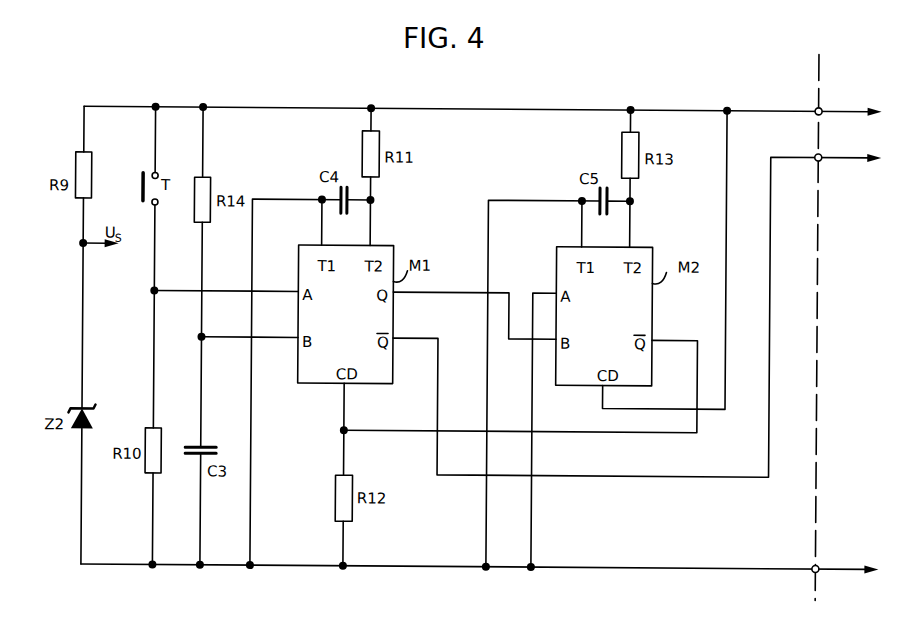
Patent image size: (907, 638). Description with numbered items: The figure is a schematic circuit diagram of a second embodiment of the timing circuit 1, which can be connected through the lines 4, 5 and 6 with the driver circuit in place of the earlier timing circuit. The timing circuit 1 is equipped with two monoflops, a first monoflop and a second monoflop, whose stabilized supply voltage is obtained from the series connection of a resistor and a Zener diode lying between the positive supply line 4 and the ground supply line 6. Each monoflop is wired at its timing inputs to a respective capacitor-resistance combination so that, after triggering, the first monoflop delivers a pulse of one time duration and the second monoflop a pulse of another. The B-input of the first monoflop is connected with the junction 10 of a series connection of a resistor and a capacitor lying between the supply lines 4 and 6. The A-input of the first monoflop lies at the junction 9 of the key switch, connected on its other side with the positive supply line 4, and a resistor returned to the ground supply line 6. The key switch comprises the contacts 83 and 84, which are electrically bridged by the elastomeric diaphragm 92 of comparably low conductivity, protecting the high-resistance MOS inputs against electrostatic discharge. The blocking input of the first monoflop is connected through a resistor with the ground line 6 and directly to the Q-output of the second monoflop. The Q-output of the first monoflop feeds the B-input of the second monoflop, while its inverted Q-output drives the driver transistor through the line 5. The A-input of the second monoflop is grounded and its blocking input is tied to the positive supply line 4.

The timing circuit 1 is at (572, 578).
The positive supply line 4 is at (826, 110).
The line 5 is at (828, 156).
The ground supply line 6 is at (829, 568).
The junction 9 is at (152, 293).
The junction 10 is at (200, 340).
The contact 83 is at (157, 175).
The contact 84 is at (157, 207).
The diaphragm 92 is at (142, 176).